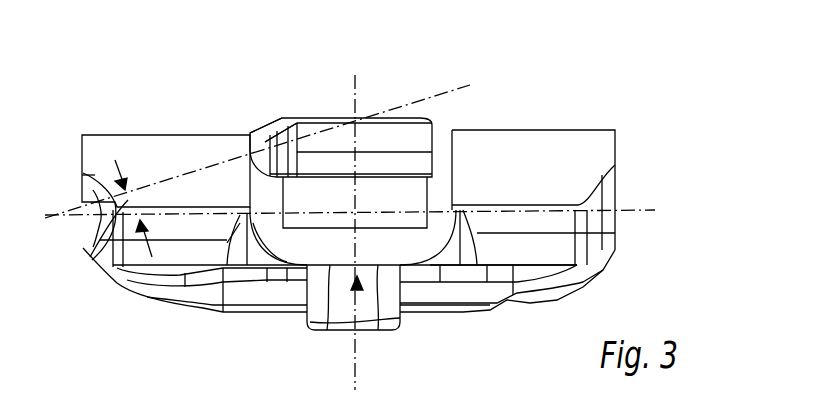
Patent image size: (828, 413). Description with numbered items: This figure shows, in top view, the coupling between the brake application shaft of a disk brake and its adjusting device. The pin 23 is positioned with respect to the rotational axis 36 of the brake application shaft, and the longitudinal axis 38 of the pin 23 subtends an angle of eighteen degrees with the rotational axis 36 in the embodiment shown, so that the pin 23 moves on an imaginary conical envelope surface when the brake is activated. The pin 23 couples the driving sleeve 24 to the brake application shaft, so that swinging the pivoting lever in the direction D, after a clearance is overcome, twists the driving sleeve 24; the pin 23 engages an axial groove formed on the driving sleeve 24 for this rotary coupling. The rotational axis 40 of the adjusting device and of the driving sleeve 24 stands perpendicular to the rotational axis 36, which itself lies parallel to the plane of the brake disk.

The pin 23 is at (245, 146).
The driving sleeve 24 is at (433, 128).
The rotational axis 36 is at (640, 207).
The longitudinal axis 38 is at (440, 92).
The rotational axis of the adjusting device 40 is at (355, 379).
The direction D is at (400, 320).